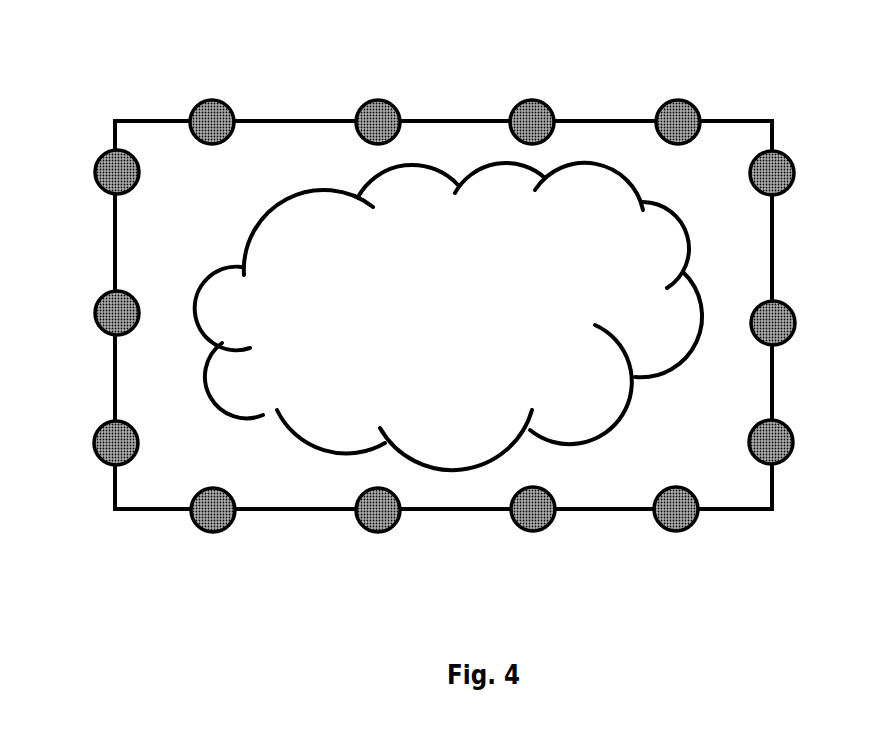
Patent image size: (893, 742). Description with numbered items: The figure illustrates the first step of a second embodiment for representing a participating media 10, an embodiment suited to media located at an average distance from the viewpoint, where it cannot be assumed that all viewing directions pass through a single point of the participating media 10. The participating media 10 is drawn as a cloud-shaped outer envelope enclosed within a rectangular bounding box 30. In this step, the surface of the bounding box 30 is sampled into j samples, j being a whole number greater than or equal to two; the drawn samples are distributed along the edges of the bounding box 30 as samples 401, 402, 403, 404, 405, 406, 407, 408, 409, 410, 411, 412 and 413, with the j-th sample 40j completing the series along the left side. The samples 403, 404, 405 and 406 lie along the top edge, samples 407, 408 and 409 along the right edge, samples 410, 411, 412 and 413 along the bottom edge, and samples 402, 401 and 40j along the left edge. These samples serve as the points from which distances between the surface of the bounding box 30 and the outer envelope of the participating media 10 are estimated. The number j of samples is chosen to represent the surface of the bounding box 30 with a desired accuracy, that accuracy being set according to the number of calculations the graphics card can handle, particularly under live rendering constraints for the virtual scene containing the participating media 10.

The participating media 10 is at (570, 397).
The bounding box 30 is at (730, 118).
The sample 401 is at (107, 305).
The sample 402 is at (107, 165).
The sample 403 is at (212, 103).
The sample 404 is at (377, 103).
The sample 405 is at (533, 110).
The sample 406 is at (678, 105).
The sample 407 is at (787, 170).
The sample 408 is at (780, 318).
The sample 409 is at (778, 438).
The sample 410 is at (688, 525).
The sample 411 is at (538, 525).
The sample 412 is at (382, 527).
The sample 413 is at (212, 530).
The j-th sample 40j is at (110, 438).